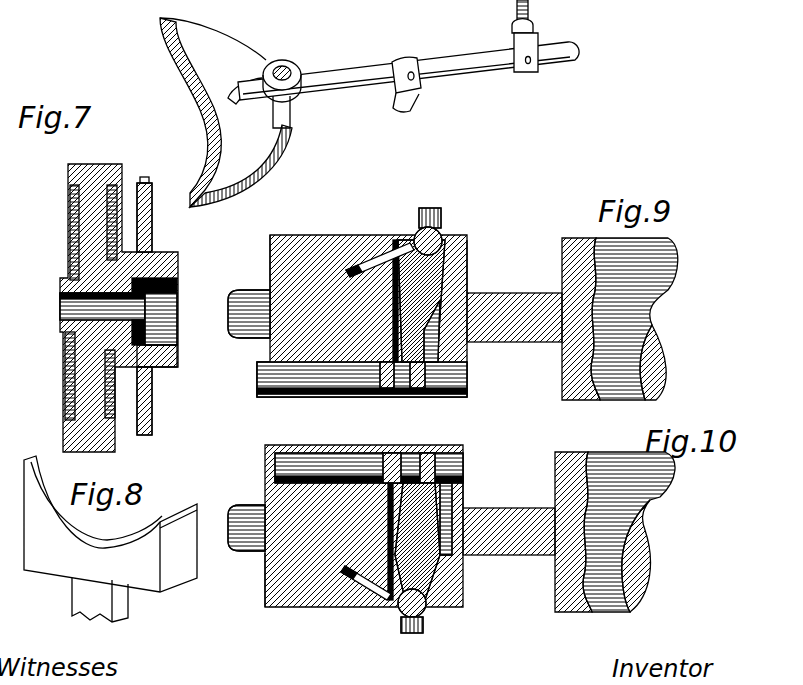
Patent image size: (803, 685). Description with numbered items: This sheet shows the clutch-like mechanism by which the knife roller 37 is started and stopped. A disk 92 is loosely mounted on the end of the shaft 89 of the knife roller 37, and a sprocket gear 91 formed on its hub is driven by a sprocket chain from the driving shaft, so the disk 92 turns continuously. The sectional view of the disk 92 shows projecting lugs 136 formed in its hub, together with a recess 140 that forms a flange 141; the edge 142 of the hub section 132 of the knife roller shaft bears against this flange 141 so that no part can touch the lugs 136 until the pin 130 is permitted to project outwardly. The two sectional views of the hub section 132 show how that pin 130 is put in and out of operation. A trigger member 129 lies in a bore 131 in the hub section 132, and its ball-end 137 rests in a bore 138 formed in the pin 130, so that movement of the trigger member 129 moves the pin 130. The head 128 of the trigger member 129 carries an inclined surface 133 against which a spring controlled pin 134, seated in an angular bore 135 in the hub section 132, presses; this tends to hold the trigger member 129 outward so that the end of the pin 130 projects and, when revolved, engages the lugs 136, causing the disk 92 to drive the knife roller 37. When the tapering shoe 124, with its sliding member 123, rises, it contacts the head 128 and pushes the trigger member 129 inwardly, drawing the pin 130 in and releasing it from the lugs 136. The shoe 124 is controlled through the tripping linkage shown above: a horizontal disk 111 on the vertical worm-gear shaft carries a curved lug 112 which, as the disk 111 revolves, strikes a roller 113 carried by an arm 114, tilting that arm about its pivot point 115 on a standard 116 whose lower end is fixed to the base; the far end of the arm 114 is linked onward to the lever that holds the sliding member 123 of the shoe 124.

In FIG. 9, the knife roller 37 is at (660, 299).
In FIG. 10, the knife roller 37 is at (652, 497).
In FIG. 9, the shaft 89 is at (246, 290).
In FIG. 10, the shaft 89 is at (243, 505).
In FIG. 7, the sprocket gear 91 is at (150, 194).
In FIG. 7, the disk 92 is at (68, 184).
In FIG. 7, the horizontal disk 111 is at (282, 165).
In FIG. 7, the curved lug 112 is at (291, 125).
In FIG. 7, the roller 113 is at (293, 66).
In FIG. 7, the arm 114 is at (355, 78).
In FIG. 7, the pivot point 115 is at (413, 62).
In FIG. 7, the standard 116 is at (420, 102).
In FIG. 8, the sliding member 123 is at (122, 613).
In FIG. 8, the shoe 124 is at (114, 542).
In FIG. 9, the head 128 is at (441, 219).
In FIG. 10, the head 128 is at (423, 627).
In FIG. 9, the trigger member 129 is at (468, 270).
In FIG. 10, the trigger member 129 is at (466, 501).
In FIG. 9, the pin 130 is at (270, 392).
In FIG. 10, the pin 130 is at (282, 463).
In FIG. 9, the bore 131 is at (470, 296).
In FIG. 10, the bore 131 is at (463, 590).
In FIG. 9, the hub section 132 is at (322, 227).
In FIG. 10, the hub section 132 is at (310, 608).
In FIG. 9, the inclined surface 133 is at (410, 240).
In FIG. 10, the inclined surface 133 is at (400, 610).
In FIG. 9, the spring controlled pin 134 is at (395, 262).
In FIG. 10, the spring controlled pin 134 is at (378, 600).
In FIG. 9, the angular bore 135 is at (358, 262).
In FIG. 10, the angular bore 135 is at (355, 582).
In FIG. 7, the projecting lugs 136 is at (178, 281).
In FIG. 7, the ball-end 137 is at (545, 36).
In FIG. 9, the ball-end 137 is at (405, 398).
In FIG. 10, the ball-end 137 is at (408, 452).
In FIG. 9, the bore 138 is at (432, 398).
In FIG. 10, the bore 138 is at (424, 452).
In FIG. 7, the recess 140 is at (178, 352).
In FIG. 7, the flange 141 is at (165, 306).
In FIG. 9, the edge 142 is at (270, 242).
In FIG. 10, the edge 142 is at (265, 591).